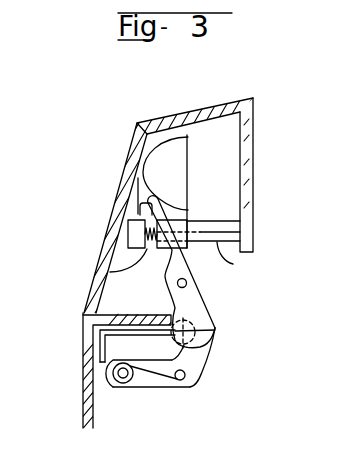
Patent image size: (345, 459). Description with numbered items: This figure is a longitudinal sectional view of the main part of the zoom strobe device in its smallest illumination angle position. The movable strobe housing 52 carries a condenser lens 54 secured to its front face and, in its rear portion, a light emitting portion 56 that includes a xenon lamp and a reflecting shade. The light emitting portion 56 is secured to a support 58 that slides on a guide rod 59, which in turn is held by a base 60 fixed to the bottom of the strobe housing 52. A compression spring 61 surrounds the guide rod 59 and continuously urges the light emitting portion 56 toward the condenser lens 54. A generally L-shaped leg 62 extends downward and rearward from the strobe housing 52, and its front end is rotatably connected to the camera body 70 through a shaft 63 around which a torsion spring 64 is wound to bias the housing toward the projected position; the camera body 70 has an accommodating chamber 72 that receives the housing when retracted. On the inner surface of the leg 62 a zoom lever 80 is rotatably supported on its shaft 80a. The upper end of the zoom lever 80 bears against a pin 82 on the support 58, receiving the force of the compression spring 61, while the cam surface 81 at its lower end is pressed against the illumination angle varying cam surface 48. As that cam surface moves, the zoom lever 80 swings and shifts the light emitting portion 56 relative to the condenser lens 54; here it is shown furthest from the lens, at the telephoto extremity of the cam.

The strobe housing 52 is at (187, 114).
The condenser lens 54 is at (250, 133).
The light emitting portion 56 is at (147, 170).
The support 58 is at (200, 222).
The base 60 is at (220, 222).
The guide rod 59 is at (233, 264).
The pin 82 is at (139, 204).
The compression spring 61 is at (111, 272).
The zoom lever 80 is at (190, 274).
The shaft 80a is at (216, 331).
The cam surface 81 is at (210, 352).
The illumination angle varying cam surface 48 is at (216, 330).
The camera body 70 is at (83, 365).
The torsion spring 64 is at (101, 393).
The shaft 63 is at (131, 389).
The leg 62 is at (198, 388).
The accommodating chamber 72 is at (222, 395).